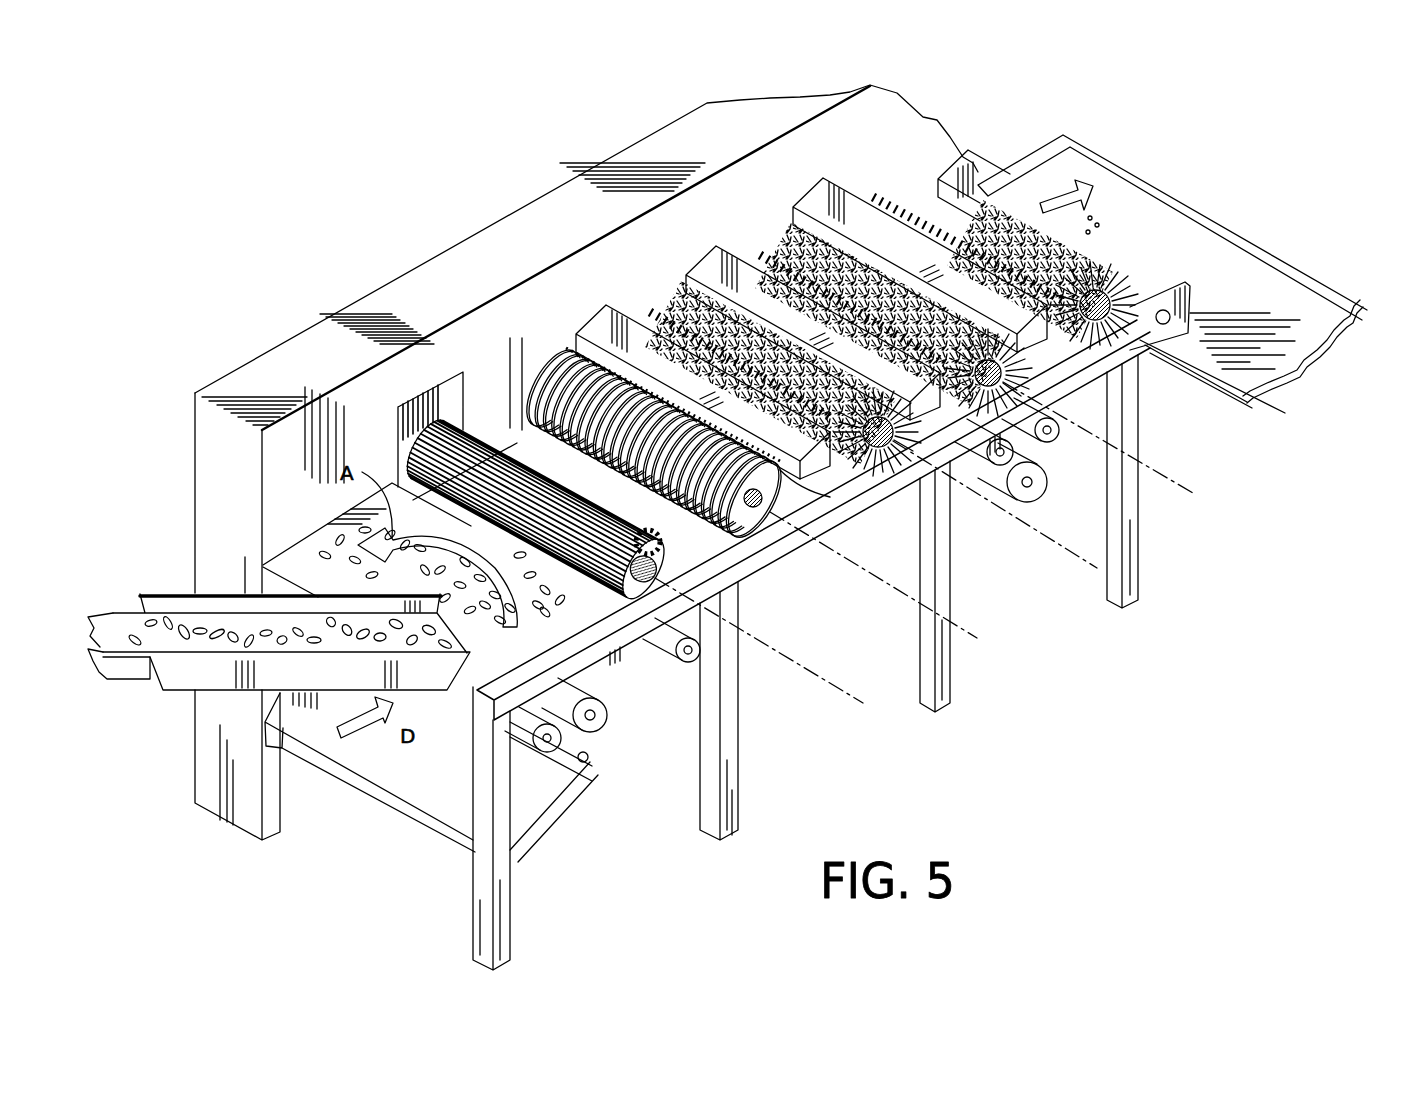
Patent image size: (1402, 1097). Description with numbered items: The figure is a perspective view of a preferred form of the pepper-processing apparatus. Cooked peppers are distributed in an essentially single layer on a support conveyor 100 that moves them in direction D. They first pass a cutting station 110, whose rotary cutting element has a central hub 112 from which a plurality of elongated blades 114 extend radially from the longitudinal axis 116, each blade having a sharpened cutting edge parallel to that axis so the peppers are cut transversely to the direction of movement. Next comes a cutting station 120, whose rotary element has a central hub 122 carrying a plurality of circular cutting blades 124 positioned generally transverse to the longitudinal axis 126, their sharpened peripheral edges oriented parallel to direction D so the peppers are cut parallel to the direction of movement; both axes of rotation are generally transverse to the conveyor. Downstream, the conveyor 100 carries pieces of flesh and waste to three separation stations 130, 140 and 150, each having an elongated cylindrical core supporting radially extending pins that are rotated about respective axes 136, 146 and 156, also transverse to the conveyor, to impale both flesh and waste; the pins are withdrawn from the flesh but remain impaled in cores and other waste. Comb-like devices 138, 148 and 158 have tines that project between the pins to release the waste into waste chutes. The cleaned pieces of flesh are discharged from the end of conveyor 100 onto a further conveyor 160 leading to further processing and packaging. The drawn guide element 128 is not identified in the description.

The conveyor 100 is at (318, 565).
The cutting station 110 is at (478, 417).
The central hub 112 is at (728, 592).
The elongated blades 114 is at (423, 437).
The longitudinal axis 116 is at (778, 650).
The cutting station 120 is at (524, 379).
The central hub 122 is at (755, 512).
The circular cutting blades 124 is at (560, 343).
The longitudinal axis 126 is at (868, 570).
The guide plate 128 is at (815, 490).
The separation station 130 is at (667, 277).
The axis 136 is at (1023, 520).
The comb-like device 138 is at (650, 307).
The separation station 140 is at (787, 177).
The axis 146 is at (1083, 425).
The comb-like device 148 is at (760, 247).
The separation station 150 is at (910, 147).
The axis 156 is at (1233, 380).
The comb-like device 158 is at (870, 190).
The further conveyor 160 is at (1233, 282).